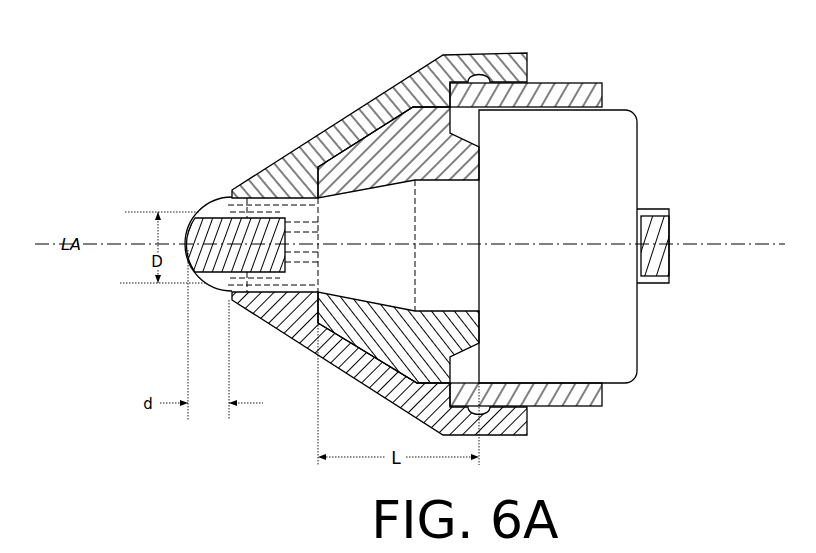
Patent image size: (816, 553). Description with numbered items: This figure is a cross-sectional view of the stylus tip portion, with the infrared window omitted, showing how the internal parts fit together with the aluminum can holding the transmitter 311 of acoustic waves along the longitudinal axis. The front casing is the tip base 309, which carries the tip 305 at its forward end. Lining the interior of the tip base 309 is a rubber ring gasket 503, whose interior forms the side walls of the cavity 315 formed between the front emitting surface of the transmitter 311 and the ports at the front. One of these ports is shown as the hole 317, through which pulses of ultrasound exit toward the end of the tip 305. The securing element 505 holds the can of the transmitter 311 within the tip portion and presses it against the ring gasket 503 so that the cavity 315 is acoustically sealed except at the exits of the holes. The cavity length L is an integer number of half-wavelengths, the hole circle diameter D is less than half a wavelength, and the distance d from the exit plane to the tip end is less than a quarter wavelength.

The tip 305 is at (208, 262).
The tip base 309 is at (377, 107).
The transmitter of acoustic waves 311 is at (632, 118).
The cavity 315 is at (287, 181).
The hole 317 is at (217, 203).
The ring gasket 503 is at (390, 152).
The securing element 505 is at (568, 93).